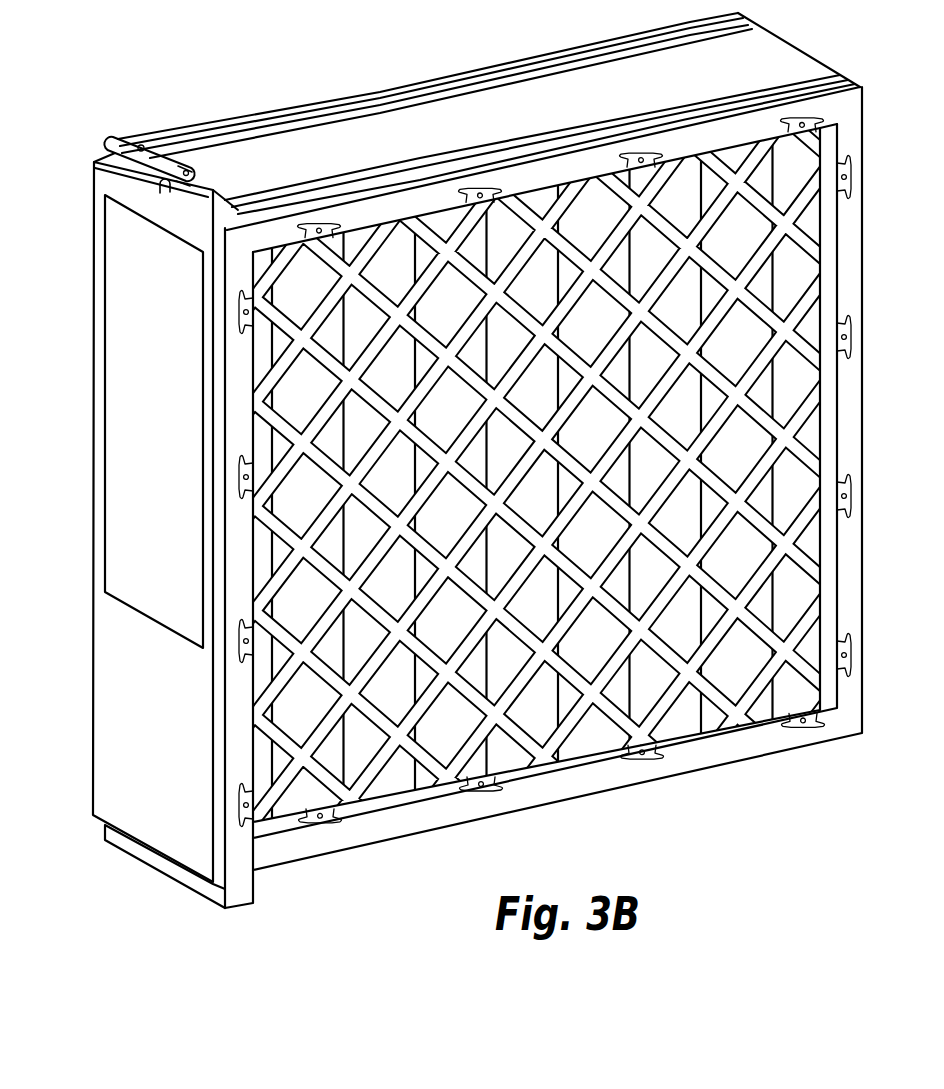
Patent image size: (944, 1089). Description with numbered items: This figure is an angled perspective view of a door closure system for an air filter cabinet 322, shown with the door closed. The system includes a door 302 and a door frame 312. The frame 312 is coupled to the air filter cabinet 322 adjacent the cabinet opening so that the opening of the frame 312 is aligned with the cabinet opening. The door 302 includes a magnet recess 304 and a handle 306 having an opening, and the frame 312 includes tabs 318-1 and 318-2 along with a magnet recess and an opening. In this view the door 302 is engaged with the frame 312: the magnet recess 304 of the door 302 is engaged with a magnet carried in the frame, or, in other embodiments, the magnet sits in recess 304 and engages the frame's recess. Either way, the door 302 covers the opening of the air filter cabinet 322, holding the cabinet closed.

The door 302 is at (140, 388).
The magnet recess 304 is at (156, 186).
The handle 306 is at (191, 184).
The door frame 312 is at (243, 886).
The tab 318-1 is at (190, 172).
The tab 318-2 is at (143, 145).
The air filter cabinet 322 is at (515, 102).